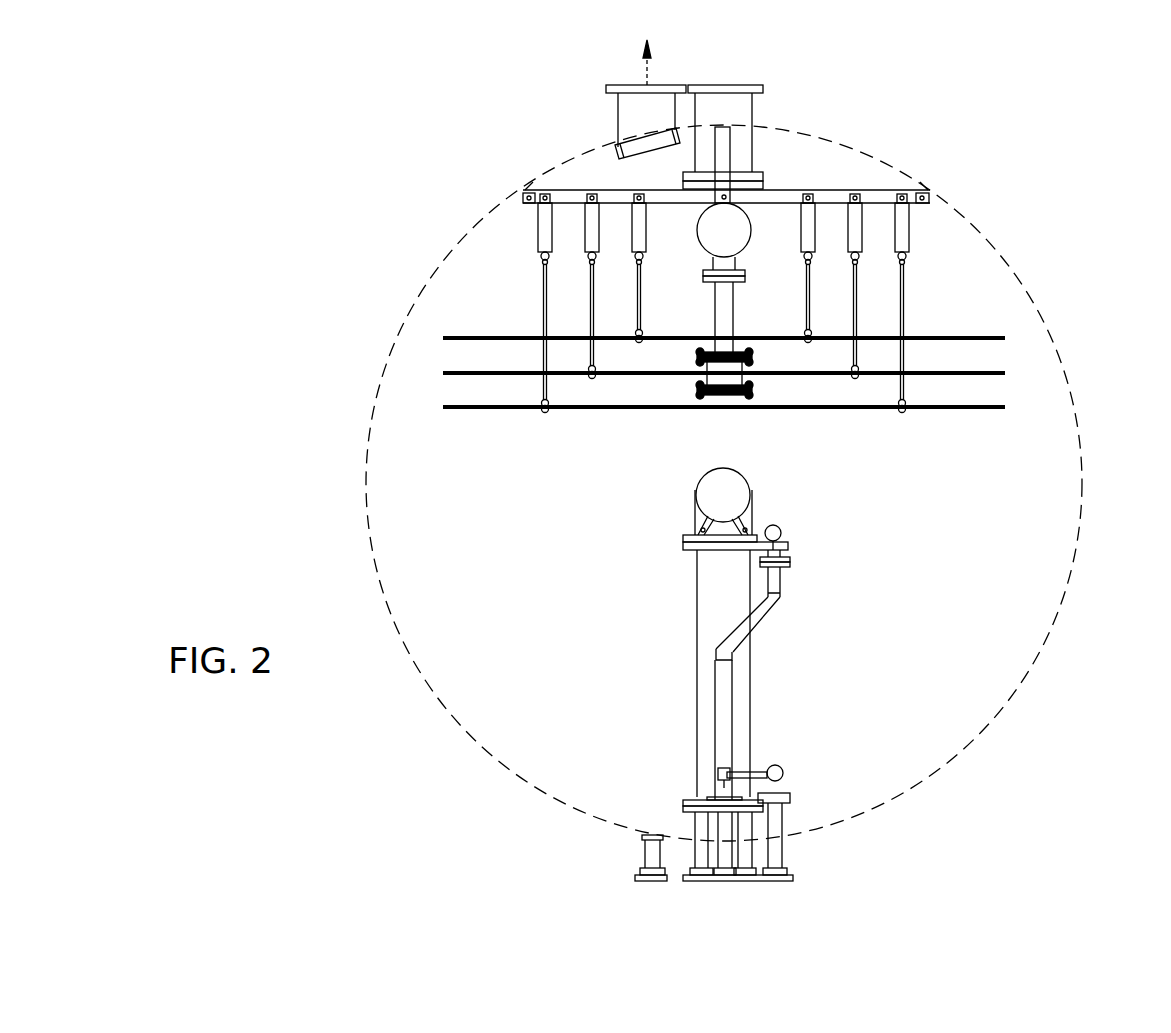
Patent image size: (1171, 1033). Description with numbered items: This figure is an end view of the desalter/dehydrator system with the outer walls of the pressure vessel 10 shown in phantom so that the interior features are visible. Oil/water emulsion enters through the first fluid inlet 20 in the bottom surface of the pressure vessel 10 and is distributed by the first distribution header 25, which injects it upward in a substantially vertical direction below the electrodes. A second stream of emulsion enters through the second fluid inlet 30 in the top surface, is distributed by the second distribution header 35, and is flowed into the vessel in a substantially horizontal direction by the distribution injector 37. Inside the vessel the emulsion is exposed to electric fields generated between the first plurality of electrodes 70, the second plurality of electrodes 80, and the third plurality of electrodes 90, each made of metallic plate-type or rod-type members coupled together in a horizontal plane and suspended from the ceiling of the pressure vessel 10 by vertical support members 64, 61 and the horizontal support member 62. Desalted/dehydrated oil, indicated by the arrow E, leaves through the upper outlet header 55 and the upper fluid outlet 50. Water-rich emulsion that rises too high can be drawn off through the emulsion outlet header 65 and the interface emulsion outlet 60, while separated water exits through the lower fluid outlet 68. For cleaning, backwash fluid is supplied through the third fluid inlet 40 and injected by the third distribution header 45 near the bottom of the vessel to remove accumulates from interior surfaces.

The pressure vessel 10 is at (385, 372).
The first fluid inlet 20 is at (695, 853).
The first distribution header 25 is at (726, 495).
The second fluid inlet 30 is at (752, 110).
The second distribution header 35 is at (733, 228).
The distribution injector 37 is at (710, 397).
The third fluid inlet 40 is at (790, 845).
The third distribution header 45 is at (776, 766).
The upper fluid outlet 50 is at (618, 113).
The upper outlet header 55 is at (612, 150).
The interface emulsion outlet 60 is at (733, 853).
The vertical support member 61 is at (722, 157).
The horizontal support member 62 is at (878, 197).
The vertical support members 64 is at (855, 230).
The emulsion outlet header 65 is at (781, 532).
The lower fluid outlet 68 is at (640, 848).
The first plurality of electrodes 70 is at (980, 335).
The second plurality of electrodes 80 is at (983, 370).
The third plurality of electrodes 90 is at (973, 408).
The desalted/dehydrated oil E is at (648, 73).